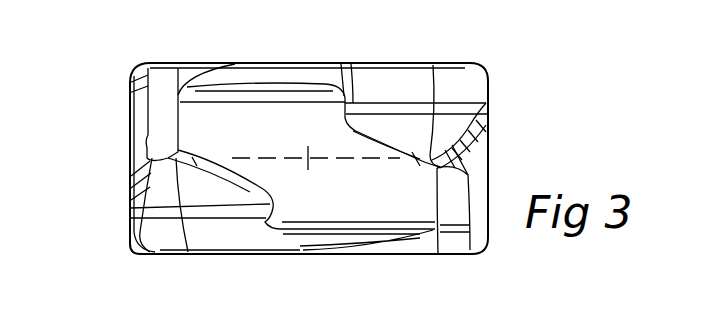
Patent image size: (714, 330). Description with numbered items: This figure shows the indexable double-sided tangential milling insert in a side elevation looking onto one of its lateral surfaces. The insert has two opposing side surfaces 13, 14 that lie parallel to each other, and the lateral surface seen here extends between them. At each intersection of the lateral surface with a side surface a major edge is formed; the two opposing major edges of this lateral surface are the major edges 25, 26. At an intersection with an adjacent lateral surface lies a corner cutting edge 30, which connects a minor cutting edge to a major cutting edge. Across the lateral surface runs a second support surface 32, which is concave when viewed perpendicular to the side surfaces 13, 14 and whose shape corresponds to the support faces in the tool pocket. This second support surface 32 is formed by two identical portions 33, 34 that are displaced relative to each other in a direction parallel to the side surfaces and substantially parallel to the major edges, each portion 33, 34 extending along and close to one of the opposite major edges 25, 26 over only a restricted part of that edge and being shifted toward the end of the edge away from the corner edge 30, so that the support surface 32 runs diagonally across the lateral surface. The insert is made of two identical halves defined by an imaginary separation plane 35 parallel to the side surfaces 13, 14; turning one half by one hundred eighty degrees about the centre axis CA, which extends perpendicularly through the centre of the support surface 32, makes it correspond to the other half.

The side surface 13 is at (325, 63).
The side surface 14 is at (292, 258).
The major edge 25 is at (234, 256).
The major edge 26 is at (250, 63).
The corner cutting edge 30 is at (133, 256).
The second support surface 32 is at (362, 218).
The portion 33 is at (438, 196).
The portion 34 is at (205, 126).
The separation plane 35 is at (256, 157).
The centre axis CA is at (305, 166).